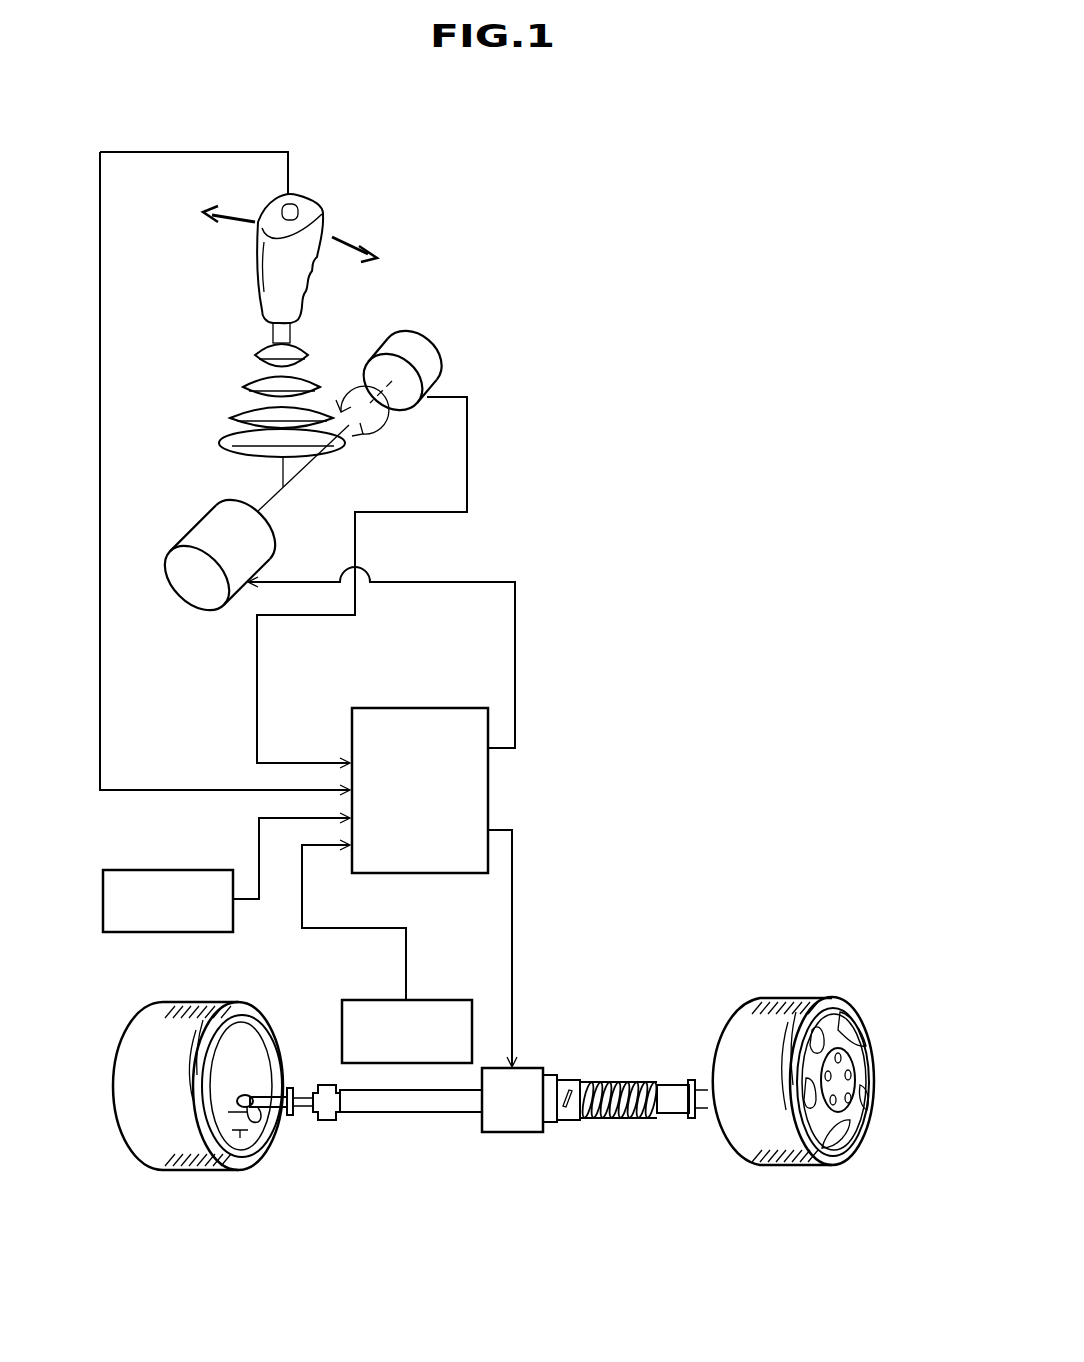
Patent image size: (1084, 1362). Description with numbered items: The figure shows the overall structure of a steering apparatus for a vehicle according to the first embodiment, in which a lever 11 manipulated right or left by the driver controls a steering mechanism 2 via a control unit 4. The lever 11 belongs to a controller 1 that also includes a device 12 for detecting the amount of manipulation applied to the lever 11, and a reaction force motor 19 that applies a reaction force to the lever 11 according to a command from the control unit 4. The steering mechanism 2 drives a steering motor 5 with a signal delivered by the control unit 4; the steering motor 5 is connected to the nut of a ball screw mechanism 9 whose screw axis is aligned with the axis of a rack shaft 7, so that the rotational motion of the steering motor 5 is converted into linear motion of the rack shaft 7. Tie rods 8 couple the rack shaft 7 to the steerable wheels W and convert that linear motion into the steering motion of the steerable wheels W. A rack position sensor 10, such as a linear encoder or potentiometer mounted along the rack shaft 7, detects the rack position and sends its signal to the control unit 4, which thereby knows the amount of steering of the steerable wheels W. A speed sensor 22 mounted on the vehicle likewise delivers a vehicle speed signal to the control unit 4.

The controller 1 is at (316, 150).
The steering mechanism 2 is at (703, 955).
The control unit 4 is at (436, 862).
The steering motor 5 is at (500, 1142).
The rack shaft 7 is at (675, 1095).
The tie rods 8 is at (262, 1108).
The ball screw mechanism 9 is at (607, 1073).
The rack position sensor 10 is at (343, 1033).
The lever 11 is at (262, 298).
The device for detection of an amount of manipulation 12 is at (406, 343).
The reaction force motor 19 is at (208, 531).
The speed sensor 22 is at (175, 870).
The steerable wheels W is at (143, 1015).